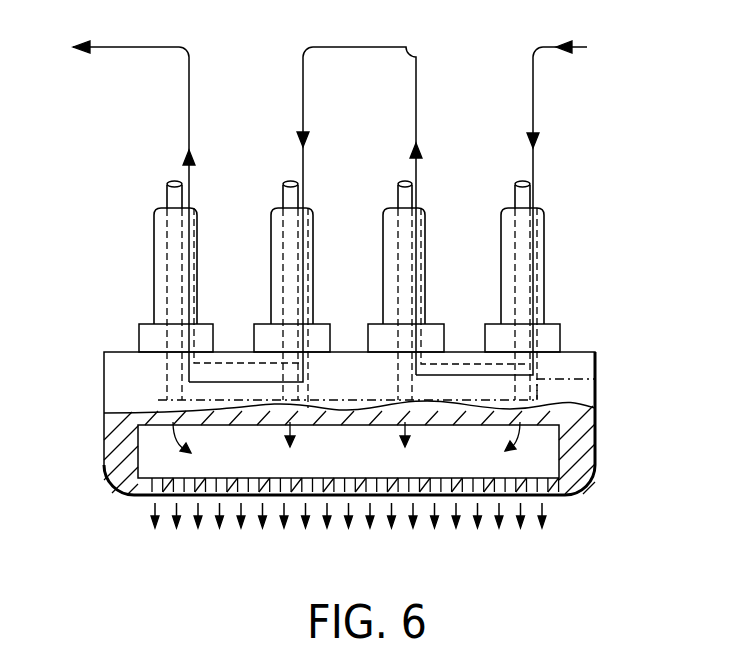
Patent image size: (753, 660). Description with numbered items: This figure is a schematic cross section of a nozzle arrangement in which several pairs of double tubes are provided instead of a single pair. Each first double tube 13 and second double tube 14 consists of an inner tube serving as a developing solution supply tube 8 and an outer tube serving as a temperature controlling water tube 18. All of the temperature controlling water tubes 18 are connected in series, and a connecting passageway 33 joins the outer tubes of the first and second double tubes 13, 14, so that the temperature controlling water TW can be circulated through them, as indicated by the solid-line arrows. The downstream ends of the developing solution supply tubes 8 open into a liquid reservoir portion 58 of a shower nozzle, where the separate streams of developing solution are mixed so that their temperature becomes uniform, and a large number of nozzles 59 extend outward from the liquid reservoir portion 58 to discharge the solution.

The developing solution supply tube 8 is at (167, 193).
The first double tube 13 is at (327, 264).
The second double tube 14 is at (212, 262).
The temperature controlling water tube 18 is at (154, 261).
The connecting passageway 33 is at (158, 399).
The liquid reservoir portion 58 is at (552, 440).
The nozzles 59 is at (547, 490).
The temperature controlling water TW is at (411, 47).